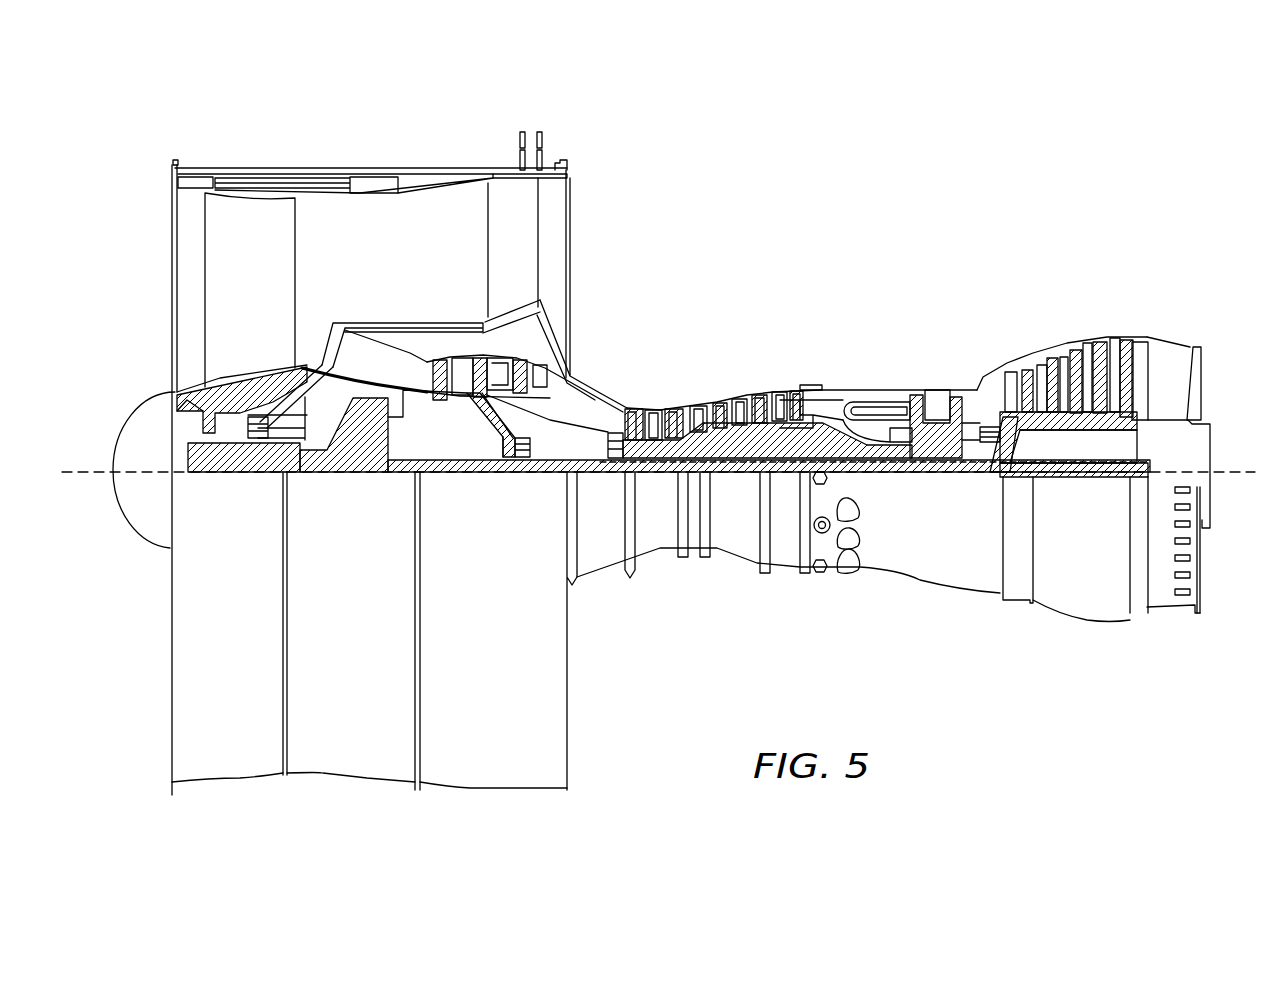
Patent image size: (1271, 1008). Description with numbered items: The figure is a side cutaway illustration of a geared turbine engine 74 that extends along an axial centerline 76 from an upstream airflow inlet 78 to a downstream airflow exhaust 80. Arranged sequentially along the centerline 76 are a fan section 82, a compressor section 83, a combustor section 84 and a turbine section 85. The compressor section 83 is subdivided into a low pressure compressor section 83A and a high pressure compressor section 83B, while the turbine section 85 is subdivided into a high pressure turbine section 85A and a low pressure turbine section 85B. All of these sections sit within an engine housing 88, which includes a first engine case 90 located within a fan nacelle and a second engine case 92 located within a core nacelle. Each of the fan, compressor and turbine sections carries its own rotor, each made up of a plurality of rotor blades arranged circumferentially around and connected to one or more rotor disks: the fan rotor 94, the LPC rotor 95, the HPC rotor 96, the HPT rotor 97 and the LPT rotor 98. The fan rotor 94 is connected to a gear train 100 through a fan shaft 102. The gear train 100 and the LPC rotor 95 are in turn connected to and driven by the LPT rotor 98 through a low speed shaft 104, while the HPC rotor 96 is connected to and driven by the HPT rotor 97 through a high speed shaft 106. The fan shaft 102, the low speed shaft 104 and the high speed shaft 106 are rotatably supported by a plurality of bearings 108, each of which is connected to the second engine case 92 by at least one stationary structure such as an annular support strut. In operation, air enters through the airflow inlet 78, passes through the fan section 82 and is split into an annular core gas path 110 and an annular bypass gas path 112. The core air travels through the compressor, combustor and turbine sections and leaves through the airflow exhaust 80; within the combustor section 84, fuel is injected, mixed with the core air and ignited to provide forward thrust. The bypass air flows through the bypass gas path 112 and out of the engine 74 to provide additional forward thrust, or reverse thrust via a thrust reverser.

The geared turbine engine 74 is at (153, 107).
The axial centerline 76 is at (75, 468).
The upstream airflow inlet 78 is at (172, 214).
The downstream airflow exhaust 80 is at (1200, 377).
The fan section 82 is at (299, 432).
The compressor section 83 is at (649, 232).
The low pressure compressor (LPC) section 83A is at (572, 132).
The high pressure compressor (HPC) section 83B is at (783, 313).
The combustor section 84 is at (848, 352).
The turbine section 85 is at (1029, 361).
The high pressure turbine (HPT) section 85A is at (983, 318).
The low pressure turbine (LPT) section 85B is at (1095, 365).
The engine housing 88 is at (605, 635).
The first engine case 90 is at (545, 795).
The second engine case 92 is at (783, 568).
The fan rotor 94 is at (177, 392).
The LPC rotor 95 is at (478, 425).
The HPC rotor 96 is at (743, 433).
The HPT rotor 97 is at (908, 400).
The LPT rotor 98 is at (1077, 423).
The gear train 100 is at (373, 470).
The fan shaft 102 is at (220, 473).
The low speed shaft 104 is at (1082, 477).
The high speed shaft 106 is at (868, 452).
The bearings 108 is at (268, 472).
The annular core gas path 110 is at (553, 385).
The annular bypass gas path 112 is at (422, 263).